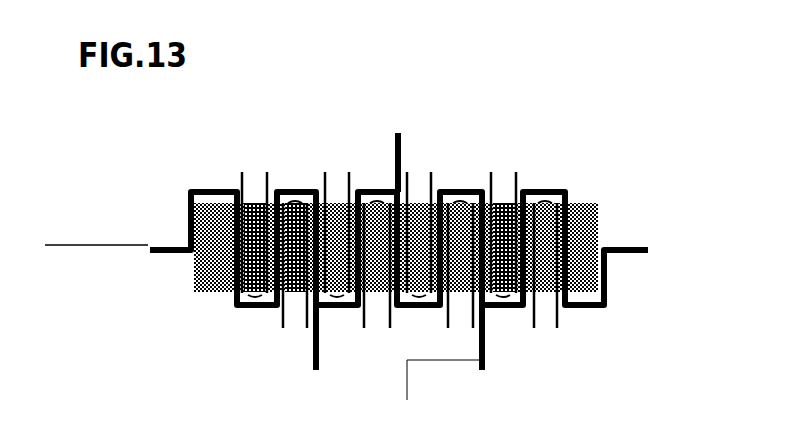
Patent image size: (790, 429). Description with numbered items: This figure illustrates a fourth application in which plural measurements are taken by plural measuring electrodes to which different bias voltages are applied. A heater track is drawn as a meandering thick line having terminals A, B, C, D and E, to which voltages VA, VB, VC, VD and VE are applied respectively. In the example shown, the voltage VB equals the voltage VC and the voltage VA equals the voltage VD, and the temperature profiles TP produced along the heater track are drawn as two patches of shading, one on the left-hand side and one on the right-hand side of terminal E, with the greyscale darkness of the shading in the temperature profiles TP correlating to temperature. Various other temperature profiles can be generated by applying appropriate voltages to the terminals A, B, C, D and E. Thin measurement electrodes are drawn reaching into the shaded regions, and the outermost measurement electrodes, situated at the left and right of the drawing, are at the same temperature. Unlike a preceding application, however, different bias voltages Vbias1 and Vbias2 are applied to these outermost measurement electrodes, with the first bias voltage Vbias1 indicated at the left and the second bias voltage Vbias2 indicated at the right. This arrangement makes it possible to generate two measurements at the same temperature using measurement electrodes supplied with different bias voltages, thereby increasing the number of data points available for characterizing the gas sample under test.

The temperature profiles TP is at (585, 232).
The first bias voltage Vbias1 is at (242, 172).
The second bias voltage Vbias2 is at (565, 325).
The terminal A is at (118, 254).
The voltage VA is at (96, 228).
The terminal B is at (319, 350).
The voltage VB is at (287, 341).
The terminal C is at (448, 352).
The voltage VC is at (507, 341).
The terminal D is at (639, 254).
The voltage VD is at (644, 231).
The terminal E is at (397, 153).
The voltage VE is at (372, 156).